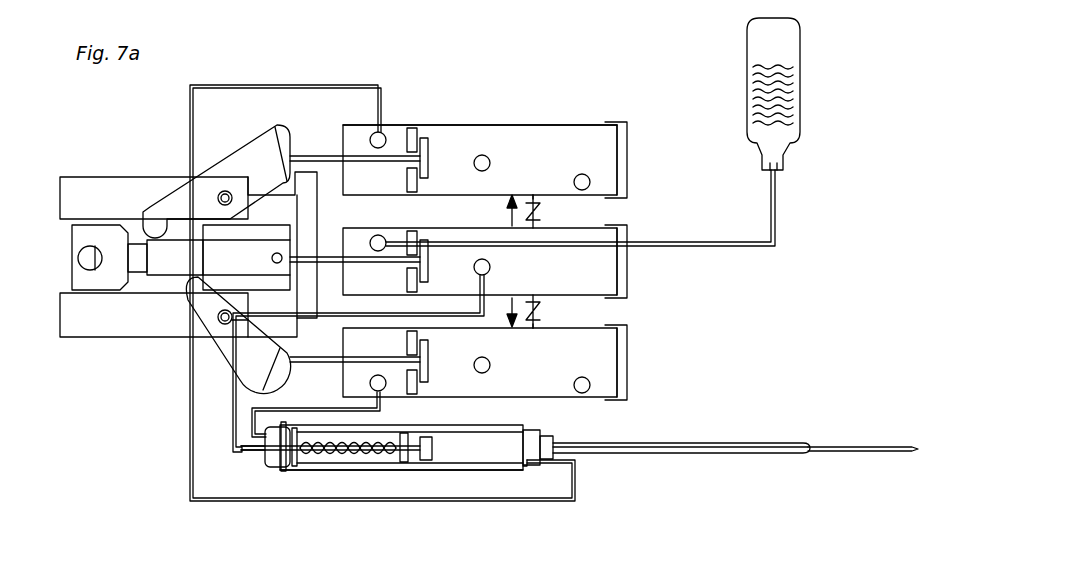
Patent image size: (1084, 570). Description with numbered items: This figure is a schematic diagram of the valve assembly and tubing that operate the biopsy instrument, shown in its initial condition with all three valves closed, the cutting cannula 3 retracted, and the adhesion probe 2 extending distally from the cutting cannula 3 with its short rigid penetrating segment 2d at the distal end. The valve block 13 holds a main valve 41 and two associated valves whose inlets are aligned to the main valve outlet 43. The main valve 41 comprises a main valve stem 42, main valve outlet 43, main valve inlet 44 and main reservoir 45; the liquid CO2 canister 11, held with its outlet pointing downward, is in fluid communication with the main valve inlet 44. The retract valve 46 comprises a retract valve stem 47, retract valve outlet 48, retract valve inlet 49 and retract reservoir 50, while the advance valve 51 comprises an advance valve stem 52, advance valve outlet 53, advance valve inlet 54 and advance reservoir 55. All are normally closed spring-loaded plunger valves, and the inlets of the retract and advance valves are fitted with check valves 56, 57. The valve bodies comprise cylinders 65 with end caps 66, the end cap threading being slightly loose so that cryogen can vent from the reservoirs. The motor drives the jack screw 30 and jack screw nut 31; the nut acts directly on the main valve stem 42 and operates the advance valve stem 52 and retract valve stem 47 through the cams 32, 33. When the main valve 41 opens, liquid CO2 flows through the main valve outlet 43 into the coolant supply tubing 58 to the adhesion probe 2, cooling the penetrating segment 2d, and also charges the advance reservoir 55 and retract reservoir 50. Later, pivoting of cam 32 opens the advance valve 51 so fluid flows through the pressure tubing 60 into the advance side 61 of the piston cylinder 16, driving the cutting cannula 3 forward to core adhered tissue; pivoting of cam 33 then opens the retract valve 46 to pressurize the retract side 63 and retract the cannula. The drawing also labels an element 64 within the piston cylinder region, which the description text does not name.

The adhesion probe 2 is at (255, 453).
The penetrating segment 2d is at (887, 446).
The cutting cannula 3 is at (737, 444).
The liquid CO2 canister 11 is at (773, 53).
The valve block 13 is at (561, 105).
The piston cylinder 16 is at (406, 485).
The jack screw 30 is at (163, 272).
The jack screw nut 31 is at (250, 240).
The cam 32 is at (205, 330).
The cam 33 is at (174, 196).
The main valve 41 is at (627, 280).
The main valve stem 42 is at (340, 253).
The main valve outlet 43 is at (475, 262).
The main valve inlet 44 is at (375, 236).
The main reservoir 45 is at (427, 261).
The retract valve 46 is at (627, 146).
The retract valve stem 47 is at (295, 153).
The retract valve outlet 48 is at (383, 133).
The retract valve inlet 49 is at (543, 197).
The retract reservoir 50 is at (486, 158).
The advance valve 51 is at (627, 357).
The advance valve stem 52 is at (327, 367).
The advance valve outlet 53 is at (384, 390).
The advance valve inlet 54 is at (617, 327).
The advance reservoir 55 is at (493, 361).
The check valve 56 is at (552, 308).
The check valve 57 is at (548, 213).
The coolant supply tubing 58 is at (228, 408).
The pressure tubing 60 is at (250, 425).
The advance side 61 is at (292, 468).
The retract side 63 is at (477, 507).
The syringe barrel 64 is at (470, 462).
The cylinder 65 is at (502, 124).
The end cap 66 is at (617, 121).